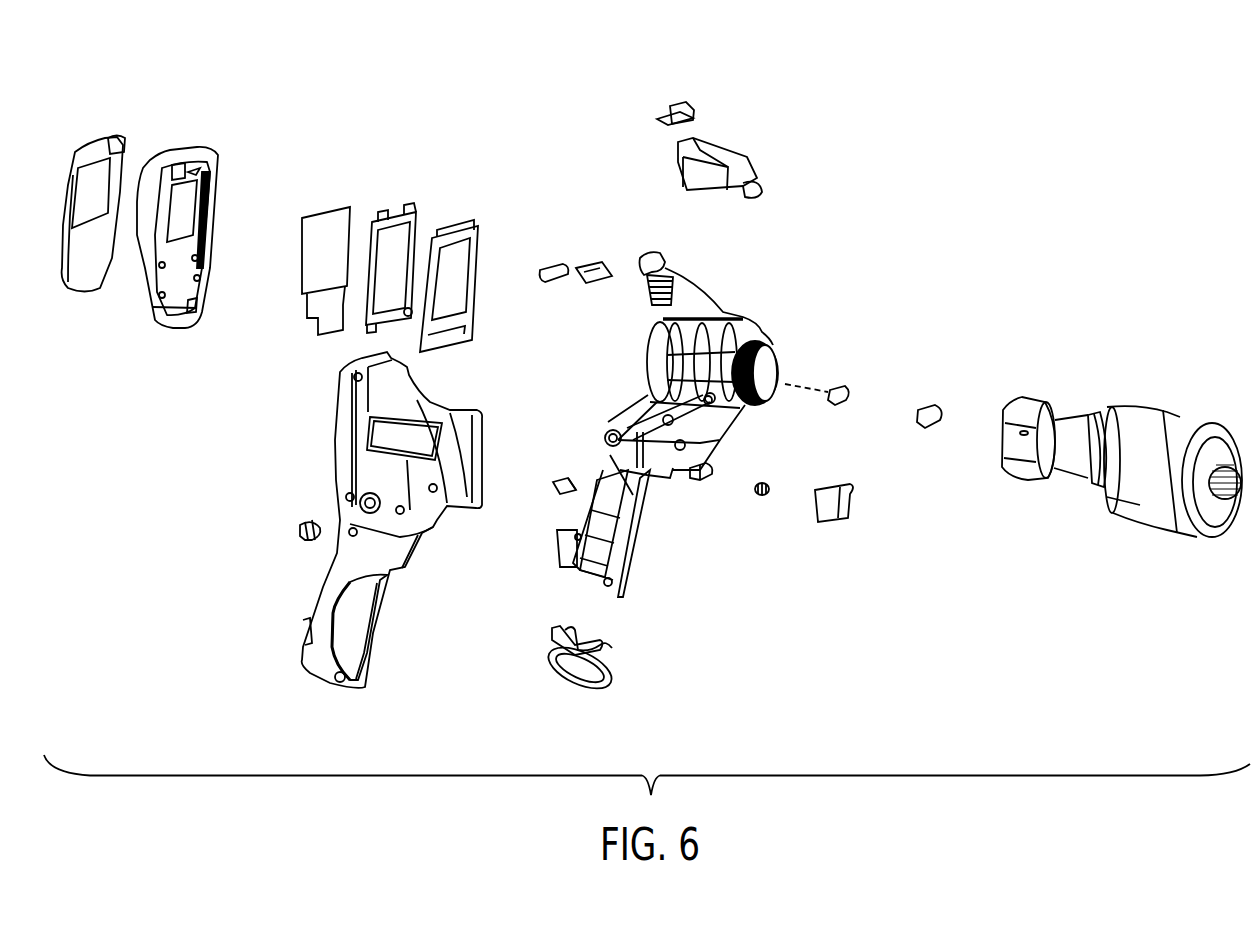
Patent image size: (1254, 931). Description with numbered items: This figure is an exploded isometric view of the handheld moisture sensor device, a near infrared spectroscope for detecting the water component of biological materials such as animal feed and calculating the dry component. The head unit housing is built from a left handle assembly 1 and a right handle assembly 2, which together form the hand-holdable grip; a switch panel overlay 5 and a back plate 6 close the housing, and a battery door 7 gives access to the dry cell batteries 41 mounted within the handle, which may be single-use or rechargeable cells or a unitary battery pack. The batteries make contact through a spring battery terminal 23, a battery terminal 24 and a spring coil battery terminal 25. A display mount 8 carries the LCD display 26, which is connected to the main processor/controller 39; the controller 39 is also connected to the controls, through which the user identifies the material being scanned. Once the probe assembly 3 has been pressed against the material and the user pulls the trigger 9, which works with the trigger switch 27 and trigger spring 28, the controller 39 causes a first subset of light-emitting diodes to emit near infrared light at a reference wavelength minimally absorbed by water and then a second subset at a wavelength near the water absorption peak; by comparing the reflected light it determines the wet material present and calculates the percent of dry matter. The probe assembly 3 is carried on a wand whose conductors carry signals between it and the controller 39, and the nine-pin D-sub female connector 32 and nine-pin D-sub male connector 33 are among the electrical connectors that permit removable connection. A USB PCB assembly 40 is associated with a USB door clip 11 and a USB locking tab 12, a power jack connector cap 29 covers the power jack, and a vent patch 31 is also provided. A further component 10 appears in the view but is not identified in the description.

The left handle assembly 1 is at (645, 255).
The right handle assembly 2 is at (340, 400).
The probe assembly 3 is at (1170, 407).
The switch panel overlay 5 is at (97, 138).
The back plate 6 is at (168, 148).
The battery door 7 is at (612, 690).
The display mount 8 is at (408, 212).
The trigger 9 is at (840, 522).
The battery 10 is at (735, 152).
The USB door clip 11 is at (694, 104).
The USB locking tab 12 is at (553, 283).
The spring battery terminal 23 is at (610, 670).
The battery terminal 24 is at (555, 480).
The spring coil battery terminal 25 is at (578, 490).
The LCD display 26 is at (332, 210).
The trigger switch 27 is at (700, 481).
The trigger spring 28 is at (765, 496).
The power jack connector cap 29 is at (299, 527).
The vent patch 31 is at (610, 647).
The 9-pin D-sub female connector 32 is at (938, 408).
The 9-pin D-sub male connector 33 is at (838, 405).
The main processor/controller 39 is at (465, 226).
The USB PCB assembly 40 is at (600, 284).
The dry cell batteries 41 is at (618, 520).